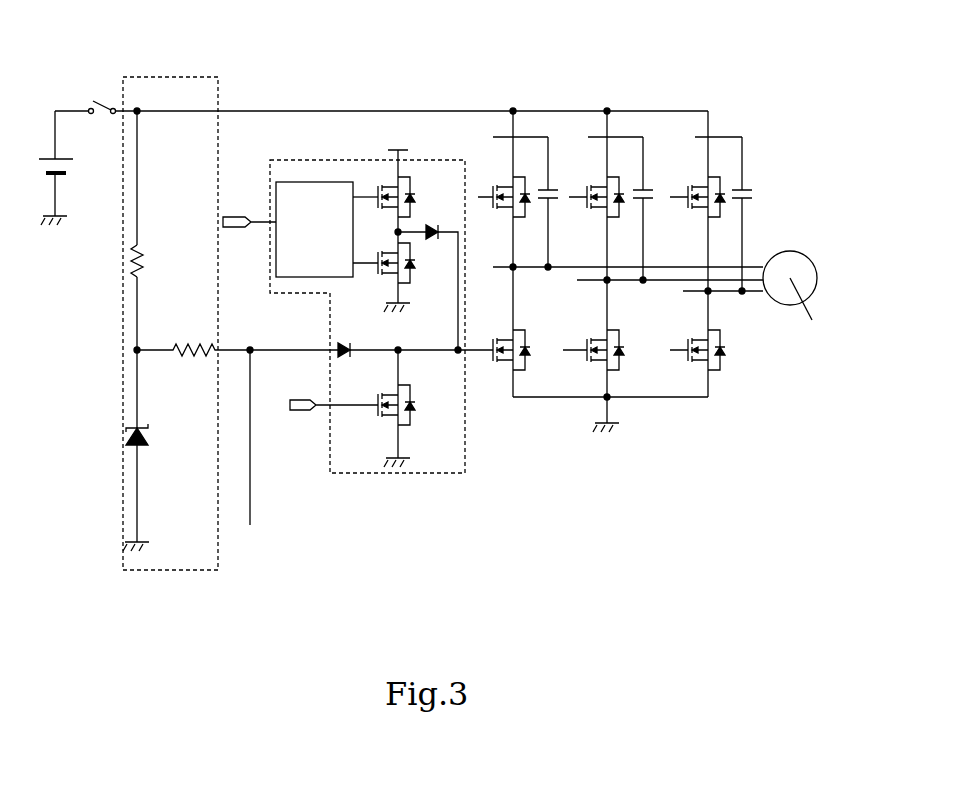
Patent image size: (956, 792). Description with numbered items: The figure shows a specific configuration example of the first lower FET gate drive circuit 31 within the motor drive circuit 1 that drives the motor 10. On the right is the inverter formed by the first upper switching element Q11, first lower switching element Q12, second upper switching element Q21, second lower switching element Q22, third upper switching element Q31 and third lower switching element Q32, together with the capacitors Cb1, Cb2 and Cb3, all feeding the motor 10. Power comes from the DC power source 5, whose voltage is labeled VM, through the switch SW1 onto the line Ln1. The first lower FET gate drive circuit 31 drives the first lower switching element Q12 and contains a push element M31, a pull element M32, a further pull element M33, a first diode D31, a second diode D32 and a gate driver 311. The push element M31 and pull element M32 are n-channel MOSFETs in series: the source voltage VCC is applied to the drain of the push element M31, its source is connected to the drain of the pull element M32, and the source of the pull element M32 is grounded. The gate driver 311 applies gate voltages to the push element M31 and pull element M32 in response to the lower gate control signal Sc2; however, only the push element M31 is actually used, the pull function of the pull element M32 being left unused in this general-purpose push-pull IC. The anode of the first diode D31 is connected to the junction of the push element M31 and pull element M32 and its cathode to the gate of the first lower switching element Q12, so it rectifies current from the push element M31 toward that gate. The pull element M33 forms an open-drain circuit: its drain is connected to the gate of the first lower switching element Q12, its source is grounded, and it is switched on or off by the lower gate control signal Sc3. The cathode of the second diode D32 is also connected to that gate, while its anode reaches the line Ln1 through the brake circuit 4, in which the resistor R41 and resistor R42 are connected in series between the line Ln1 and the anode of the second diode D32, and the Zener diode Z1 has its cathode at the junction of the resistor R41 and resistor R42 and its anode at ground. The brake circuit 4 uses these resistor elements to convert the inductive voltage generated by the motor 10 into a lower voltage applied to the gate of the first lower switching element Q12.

The motor drive circuit 1 is at (643, 231).
The brake circuit 4 is at (230, 300).
The DC power source 5 is at (74, 161).
The motor 10 is at (774, 308).
The first lower FET gate drive circuit 31 is at (358, 302).
The gate driver 311 is at (363, 180).
The switch SW1 is at (105, 98).
The line Ln1 is at (345, 111).
The motor power supply voltage VM is at (38, 148).
The source voltage VCC is at (399, 155).
The lower gate control signal Sc2 is at (249, 211).
The lower gate control signal Sc3 is at (334, 398).
The resistor R41 is at (146, 266).
The resistor R42 is at (186, 346).
The Zener diode Z1 is at (156, 434).
The push element M31 is at (384, 209).
The pull element M32 is at (385, 286).
The pull element M33 is at (393, 386).
The first diode D31 is at (434, 224).
The second diode D32 is at (349, 347).
The first upper switching element Q11 is at (503, 185).
The first lower switching element Q12 is at (500, 322).
The second upper switching element Q21 is at (597, 185).
The second lower switching element Q22 is at (592, 322).
The third upper switching element Q31 is at (690, 185).
The third lower switching element Q32 is at (688, 322).
The capacitor Cb1 is at (552, 201).
The capacitor Cb2 is at (652, 201).
The capacitor Cb3 is at (750, 200).